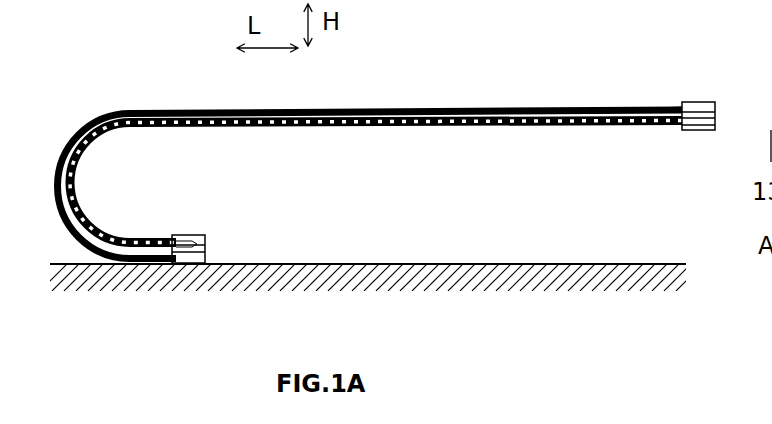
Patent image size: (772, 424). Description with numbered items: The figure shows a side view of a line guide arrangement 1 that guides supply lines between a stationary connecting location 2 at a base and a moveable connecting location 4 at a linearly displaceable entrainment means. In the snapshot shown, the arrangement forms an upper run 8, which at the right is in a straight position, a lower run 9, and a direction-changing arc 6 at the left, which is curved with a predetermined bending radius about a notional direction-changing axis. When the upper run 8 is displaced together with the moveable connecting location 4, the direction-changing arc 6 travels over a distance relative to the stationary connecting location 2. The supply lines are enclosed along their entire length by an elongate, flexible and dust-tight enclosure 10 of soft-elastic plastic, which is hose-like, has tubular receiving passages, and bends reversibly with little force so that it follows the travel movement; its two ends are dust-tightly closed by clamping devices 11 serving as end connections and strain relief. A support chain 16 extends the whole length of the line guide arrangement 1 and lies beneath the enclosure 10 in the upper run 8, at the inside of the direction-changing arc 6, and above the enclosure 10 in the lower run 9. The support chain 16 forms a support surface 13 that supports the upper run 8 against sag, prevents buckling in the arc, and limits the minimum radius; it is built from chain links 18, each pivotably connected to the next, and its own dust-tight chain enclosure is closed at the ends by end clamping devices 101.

The line guide arrangement 1 is at (399, 131).
The stationary connecting location 2 is at (228, 225).
The moveable connecting location 4 is at (672, 83).
The direction-changing arc 6 is at (112, 183).
The upper run 8 is at (435, 99).
The lower run 9 is at (132, 274).
The enclosure 10 is at (72, 140).
The clamping device 11 is at (206, 252).
The support surface 13 is at (668, 104).
The support chain 16 is at (95, 132).
The chain link 18 is at (370, 128).
The end clamping device 101 is at (203, 236).